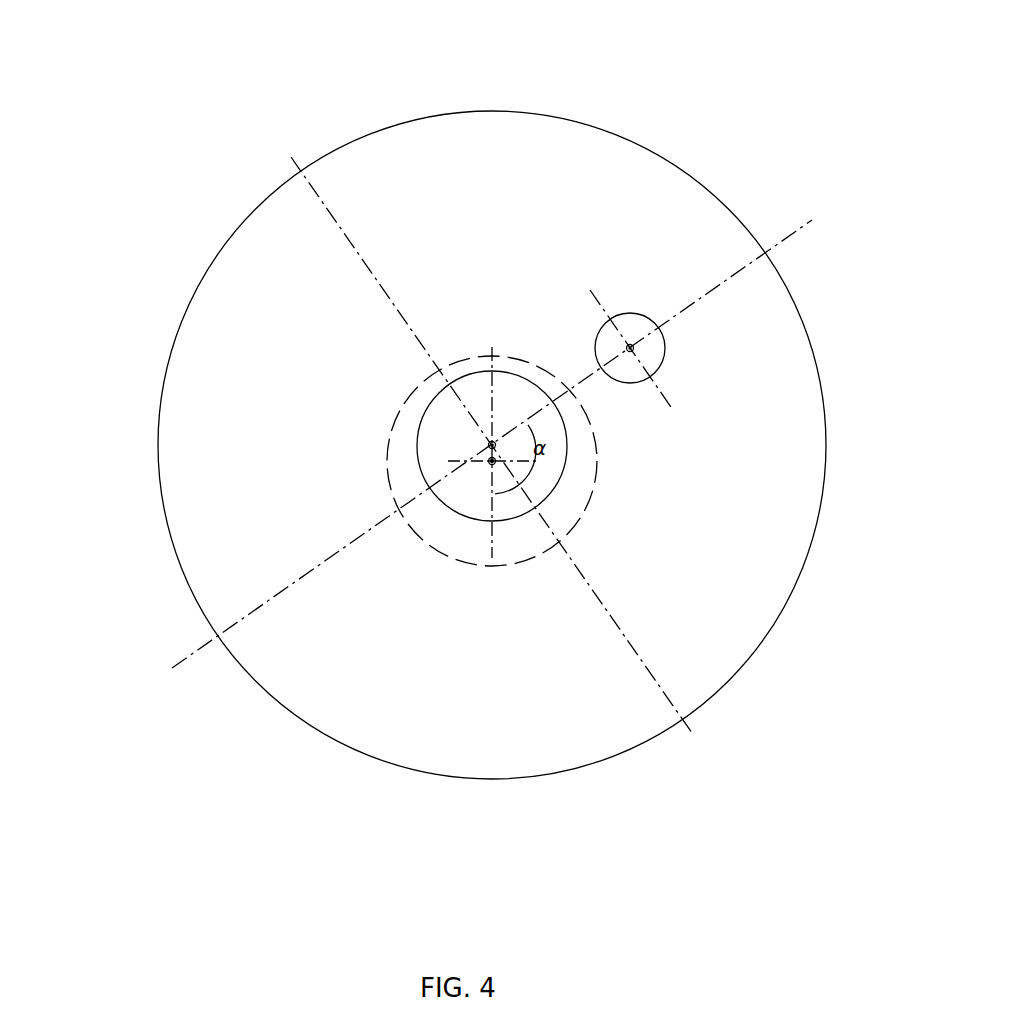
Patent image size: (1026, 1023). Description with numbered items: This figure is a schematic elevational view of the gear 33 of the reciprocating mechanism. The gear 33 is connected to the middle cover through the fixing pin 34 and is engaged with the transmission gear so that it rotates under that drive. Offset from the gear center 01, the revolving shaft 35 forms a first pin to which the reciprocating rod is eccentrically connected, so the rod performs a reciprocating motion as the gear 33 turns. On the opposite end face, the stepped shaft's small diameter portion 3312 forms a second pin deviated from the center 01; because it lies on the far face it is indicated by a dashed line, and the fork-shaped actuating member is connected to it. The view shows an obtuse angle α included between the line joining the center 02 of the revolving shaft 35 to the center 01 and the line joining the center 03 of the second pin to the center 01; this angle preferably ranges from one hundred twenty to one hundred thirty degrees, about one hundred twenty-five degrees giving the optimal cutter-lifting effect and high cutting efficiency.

The gear 33 is at (407, 188).
The fixing pin 34 is at (455, 434).
The small diameter portion 3312 is at (583, 515).
The revolving shaft 35 is at (633, 332).
The center of the revolving shaft 02 is at (637, 347).
The center of the gear 01 is at (490, 447).
The center of the second pin 03 is at (492, 462).